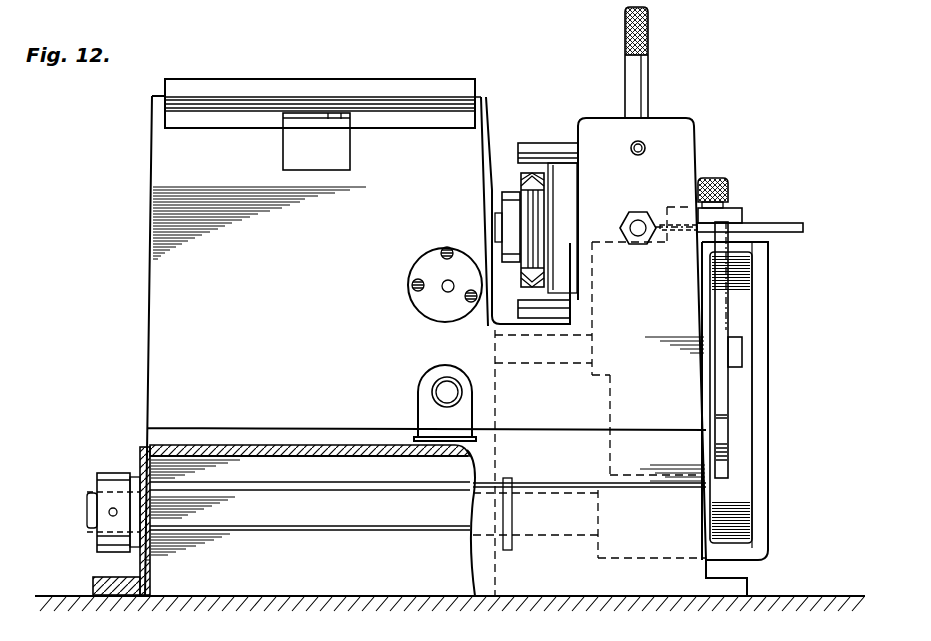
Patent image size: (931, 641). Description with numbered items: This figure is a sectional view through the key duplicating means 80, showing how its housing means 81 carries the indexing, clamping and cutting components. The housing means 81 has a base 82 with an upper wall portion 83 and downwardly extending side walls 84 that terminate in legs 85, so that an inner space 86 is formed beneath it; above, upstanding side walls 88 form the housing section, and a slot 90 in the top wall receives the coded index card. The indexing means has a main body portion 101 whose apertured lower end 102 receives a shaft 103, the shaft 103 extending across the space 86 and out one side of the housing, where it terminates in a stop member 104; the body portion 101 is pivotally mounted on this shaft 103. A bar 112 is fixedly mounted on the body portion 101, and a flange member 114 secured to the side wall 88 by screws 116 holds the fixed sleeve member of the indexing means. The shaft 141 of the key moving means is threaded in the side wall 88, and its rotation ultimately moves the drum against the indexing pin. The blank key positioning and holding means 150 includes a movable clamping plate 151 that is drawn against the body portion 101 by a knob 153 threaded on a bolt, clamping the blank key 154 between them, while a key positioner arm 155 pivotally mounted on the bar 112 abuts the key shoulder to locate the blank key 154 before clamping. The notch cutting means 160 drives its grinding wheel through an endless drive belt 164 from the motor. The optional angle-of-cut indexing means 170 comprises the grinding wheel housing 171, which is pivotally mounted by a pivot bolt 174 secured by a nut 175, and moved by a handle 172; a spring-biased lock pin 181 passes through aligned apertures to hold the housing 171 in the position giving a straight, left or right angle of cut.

The duplicating means 80 is at (112, 151).
The housing means 81 is at (300, 91).
The base 82 is at (137, 444).
The upper wall portion 83 is at (241, 452).
The side walls 84 is at (143, 572).
The legs 85 is at (130, 592).
The inner space 86 is at (312, 523).
The side walls 88 is at (425, 346).
The slot 90 is at (337, 112).
The main body portion 101 is at (758, 402).
The apertured lower end 102 is at (742, 558).
The shaft 103 is at (330, 503).
The stop member 104 is at (95, 541).
The bar 112 is at (736, 351).
The flange member 114 is at (430, 265).
The screws 116 is at (412, 287).
The shaft 141 is at (445, 390).
The blank key positioning and holding means 150 is at (773, 314).
The clamping plate 151 is at (738, 214).
The knob 153 is at (728, 186).
The blank key 154 is at (800, 233).
The key positioner arm 155 is at (725, 447).
The notch cutting means 160 is at (500, 190).
The endless drive belt 164 is at (532, 288).
The angle-of-cut indexing means 170 is at (524, 136).
The housing 171 is at (560, 144).
The handle 172 is at (644, 68).
The pivot bolt 174 is at (636, 240).
The nut 175 is at (621, 222).
The lock pin 181 is at (643, 143).